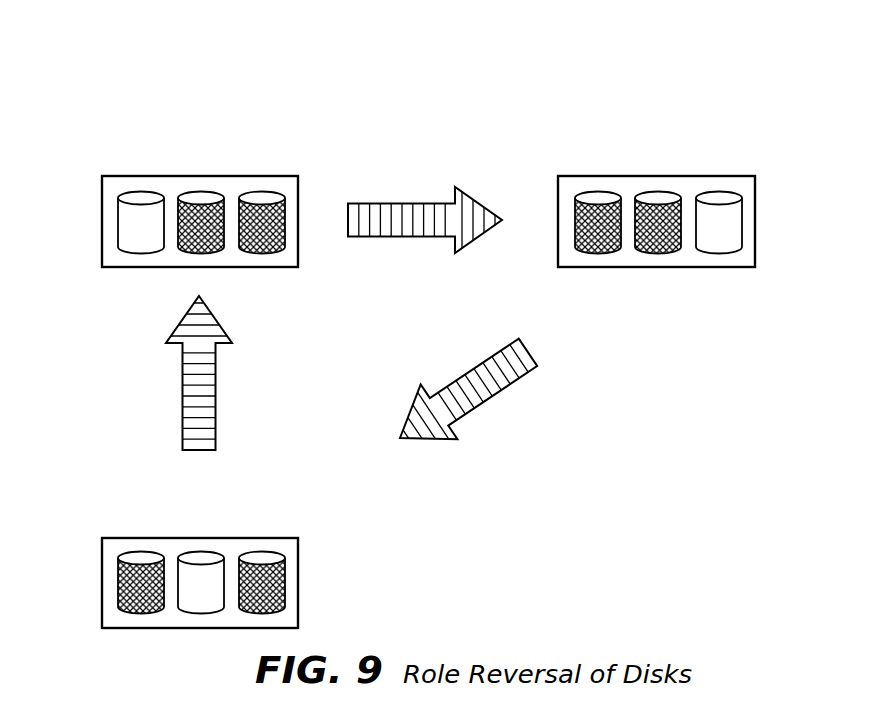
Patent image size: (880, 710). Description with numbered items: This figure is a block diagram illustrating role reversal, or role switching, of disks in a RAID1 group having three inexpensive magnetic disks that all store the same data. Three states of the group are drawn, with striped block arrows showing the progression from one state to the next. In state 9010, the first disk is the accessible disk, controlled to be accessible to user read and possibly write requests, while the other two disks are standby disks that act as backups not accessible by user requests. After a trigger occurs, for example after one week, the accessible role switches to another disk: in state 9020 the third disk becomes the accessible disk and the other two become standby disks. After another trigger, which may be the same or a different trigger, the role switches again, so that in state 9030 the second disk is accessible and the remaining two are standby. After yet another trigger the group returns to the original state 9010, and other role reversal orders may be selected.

The first state 9010 is at (185, 102).
The second state 9020 is at (615, 102).
The third state 9030 is at (318, 587).